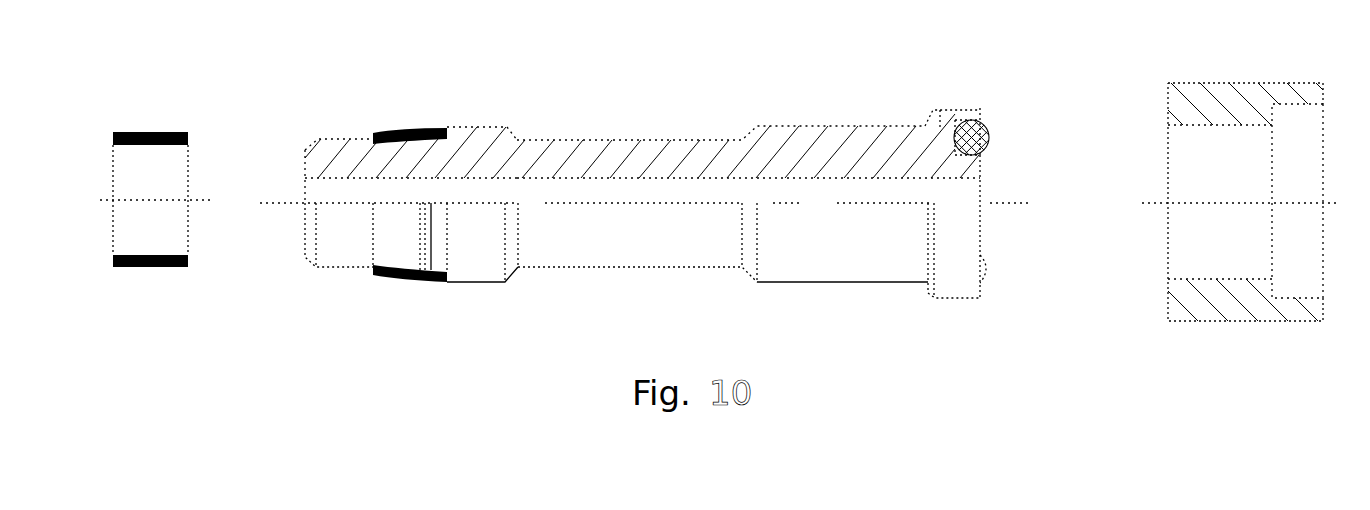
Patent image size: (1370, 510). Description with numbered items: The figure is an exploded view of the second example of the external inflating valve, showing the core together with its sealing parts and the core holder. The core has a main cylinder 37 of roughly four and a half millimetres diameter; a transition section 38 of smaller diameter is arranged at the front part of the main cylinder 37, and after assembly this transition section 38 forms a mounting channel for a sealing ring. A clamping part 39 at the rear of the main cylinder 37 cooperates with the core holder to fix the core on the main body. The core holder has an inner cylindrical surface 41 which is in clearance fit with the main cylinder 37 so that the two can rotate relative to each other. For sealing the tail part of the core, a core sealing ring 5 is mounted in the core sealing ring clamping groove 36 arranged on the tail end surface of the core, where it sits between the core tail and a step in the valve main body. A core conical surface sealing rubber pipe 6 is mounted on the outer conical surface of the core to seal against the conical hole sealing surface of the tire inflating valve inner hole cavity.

The core conical surface sealing rubber pipe 6 is at (375, 130).
The transition section 38 is at (620, 139).
The main cylinder 37 is at (823, 137).
The clamping part 39 is at (946, 122).
The core sealing ring clamping groove 36 is at (968, 110).
The core sealing ring 5 is at (1040, 104).
The inner cylindrical surface 41 is at (1200, 125).